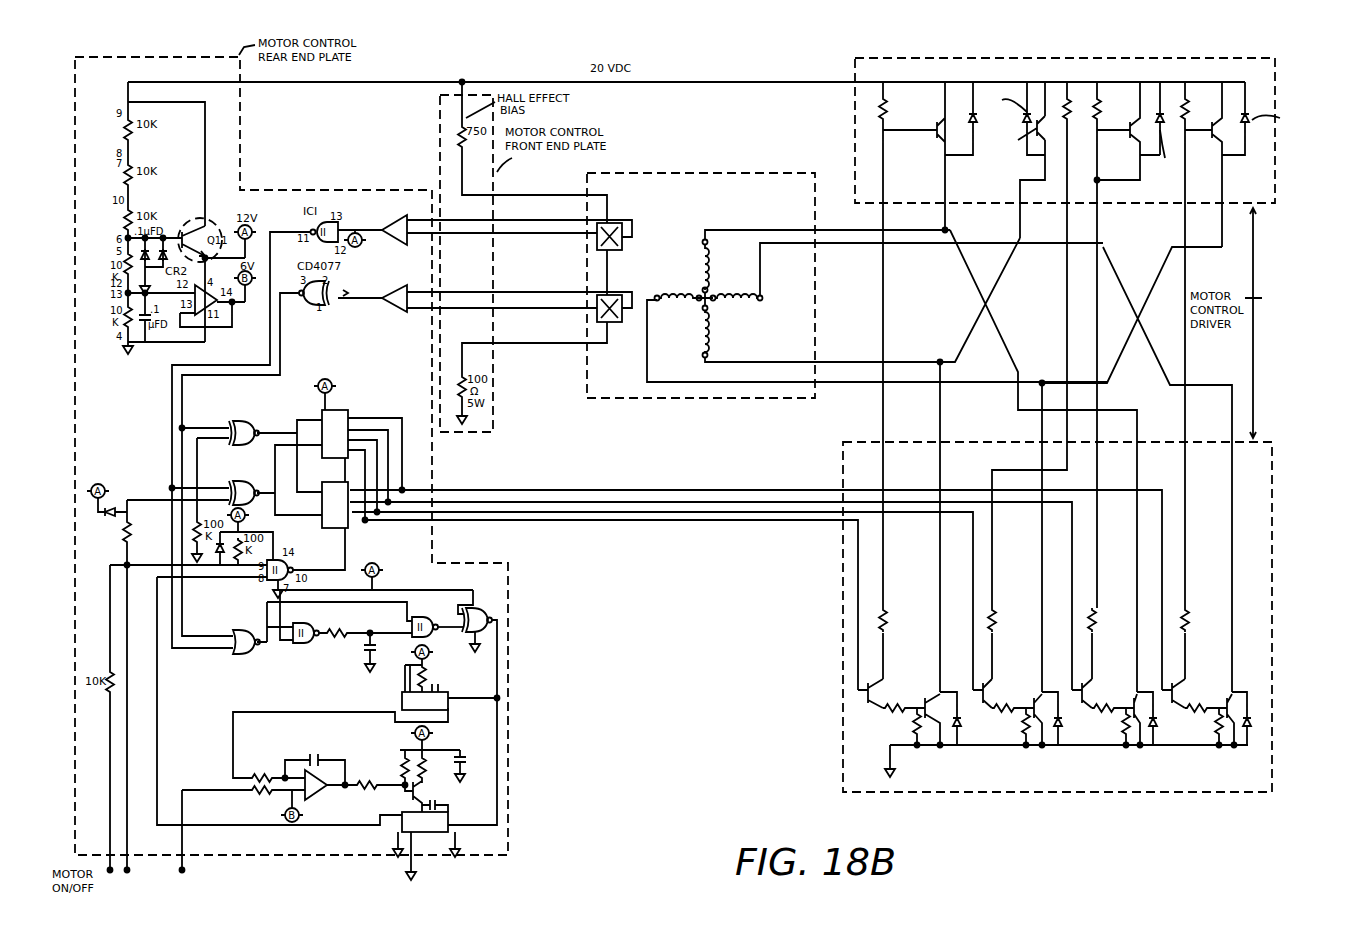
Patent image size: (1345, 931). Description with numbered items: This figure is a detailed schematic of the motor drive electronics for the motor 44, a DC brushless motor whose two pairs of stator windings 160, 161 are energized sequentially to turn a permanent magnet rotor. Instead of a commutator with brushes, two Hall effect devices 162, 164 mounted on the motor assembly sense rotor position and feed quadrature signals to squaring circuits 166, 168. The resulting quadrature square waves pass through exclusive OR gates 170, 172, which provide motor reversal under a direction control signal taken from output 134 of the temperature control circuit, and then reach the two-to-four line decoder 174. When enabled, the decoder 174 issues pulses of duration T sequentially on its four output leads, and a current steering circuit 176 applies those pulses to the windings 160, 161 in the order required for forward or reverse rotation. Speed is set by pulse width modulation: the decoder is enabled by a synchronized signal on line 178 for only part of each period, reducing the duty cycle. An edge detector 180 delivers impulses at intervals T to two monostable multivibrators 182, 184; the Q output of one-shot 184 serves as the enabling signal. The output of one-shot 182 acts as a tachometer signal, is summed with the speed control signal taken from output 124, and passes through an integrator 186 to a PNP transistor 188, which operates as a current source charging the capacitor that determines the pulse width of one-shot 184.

The motor 44 is at (703, 172).
The output 124 is at (193, 790).
The output 134 is at (160, 872).
The stator windings 160 is at (756, 294).
The stator windings 161 is at (710, 342).
The Hall effect device 162 is at (618, 250).
The Hall effect device 164 is at (628, 323).
The squaring circuit 166 is at (485, 223).
The squaring circuit 168 is at (481, 302).
The exclusive OR gate 170 is at (233, 476).
The exclusive OR gate 172 is at (226, 421).
The two-to-four line decoder 174 is at (350, 453).
The current steering circuit 176 is at (1130, 57).
The line 178 is at (392, 751).
The edge detector 180 is at (459, 581).
The monostable multivibrator 182 is at (443, 679).
The monostable multivibrator 184 is at (430, 833).
The integrator 186 is at (318, 797).
The PNP transistor 188 is at (430, 787).